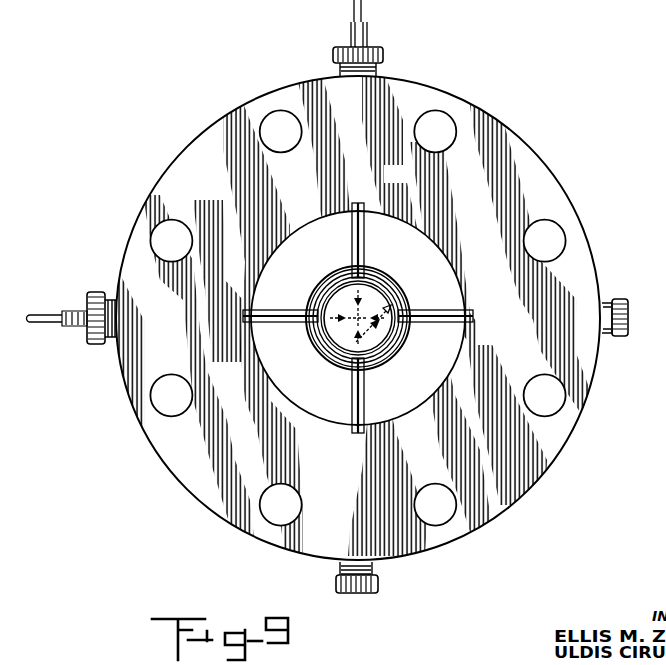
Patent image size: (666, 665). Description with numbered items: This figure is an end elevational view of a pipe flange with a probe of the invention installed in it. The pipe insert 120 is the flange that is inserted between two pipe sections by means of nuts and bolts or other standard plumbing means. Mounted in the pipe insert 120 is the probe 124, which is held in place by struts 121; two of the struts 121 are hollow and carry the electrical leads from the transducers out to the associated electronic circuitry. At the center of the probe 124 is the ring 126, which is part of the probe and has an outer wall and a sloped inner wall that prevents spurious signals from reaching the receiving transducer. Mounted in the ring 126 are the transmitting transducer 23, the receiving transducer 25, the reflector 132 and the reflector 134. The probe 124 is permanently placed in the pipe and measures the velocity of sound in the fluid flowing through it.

The pipe insert 120 is at (572, 192).
The struts 121 is at (364, 206).
The probe 124 is at (379, 243).
The transmitting transducer 23 is at (338, 262).
The ring 126 is at (375, 270).
The receiving transducer 25 is at (307, 305).
The reflector 134 is at (400, 292).
The reflector 132 is at (372, 358).